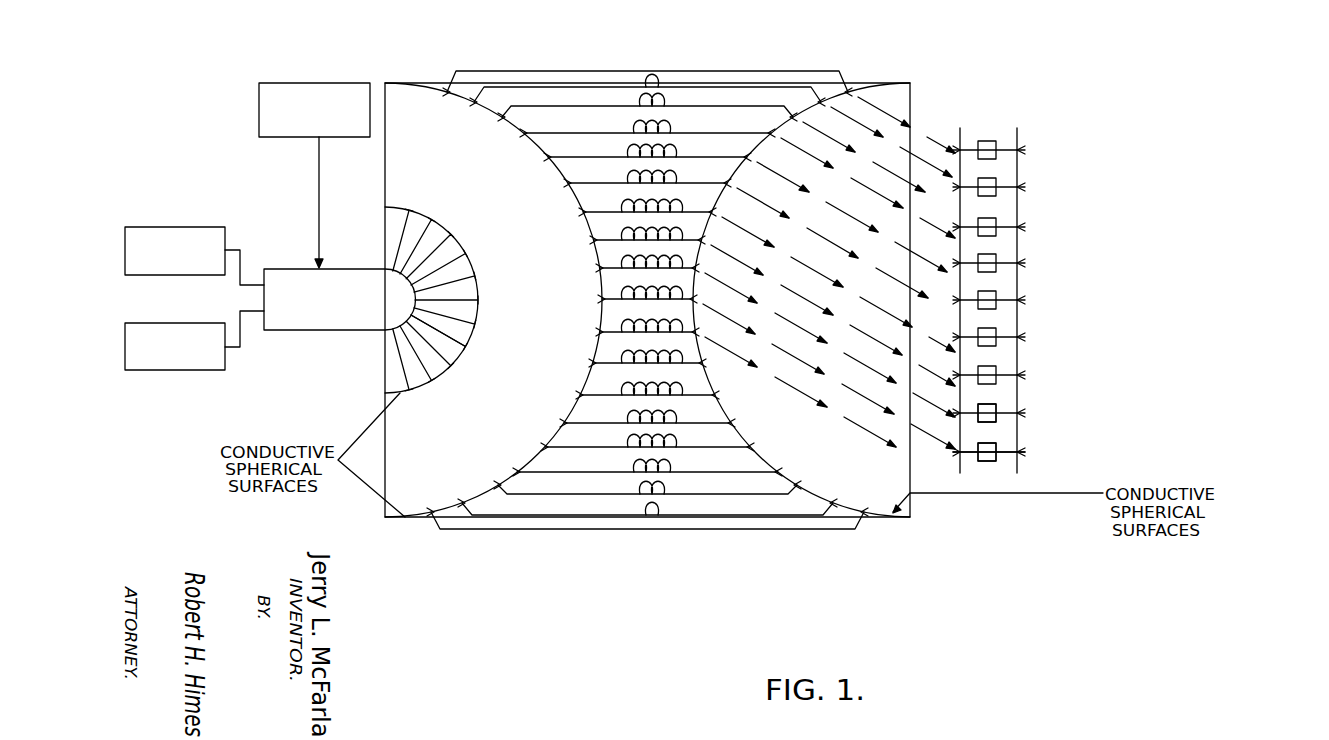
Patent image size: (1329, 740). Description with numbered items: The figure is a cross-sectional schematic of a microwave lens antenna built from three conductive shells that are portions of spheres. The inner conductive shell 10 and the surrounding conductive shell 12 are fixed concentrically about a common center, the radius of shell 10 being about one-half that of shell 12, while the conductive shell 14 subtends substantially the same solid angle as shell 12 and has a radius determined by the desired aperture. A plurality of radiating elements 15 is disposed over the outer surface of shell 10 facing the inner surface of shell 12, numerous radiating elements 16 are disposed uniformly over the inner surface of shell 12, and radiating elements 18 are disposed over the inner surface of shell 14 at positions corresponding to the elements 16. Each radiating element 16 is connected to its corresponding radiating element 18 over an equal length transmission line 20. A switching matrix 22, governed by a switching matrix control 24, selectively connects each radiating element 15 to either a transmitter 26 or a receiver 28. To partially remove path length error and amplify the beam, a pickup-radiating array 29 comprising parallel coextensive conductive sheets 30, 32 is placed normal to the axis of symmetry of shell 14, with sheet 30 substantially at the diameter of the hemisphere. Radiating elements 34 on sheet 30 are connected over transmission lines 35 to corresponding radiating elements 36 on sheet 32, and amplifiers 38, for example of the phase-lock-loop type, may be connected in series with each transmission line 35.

The conductive shell 10 is at (443, 223).
The conductive shell 12 is at (520, 125).
The conductive shell 14 is at (800, 107).
The radiating elements 15 is at (478, 330).
The radiating elements 16 is at (580, 213).
The radiating elements 18 is at (702, 240).
The equal length transmission line 20 is at (664, 447).
The switching matrix 22 is at (300, 330).
The switching matrix control 24 is at (262, 126).
The transmitter 26 is at (180, 268).
The receiver 28 is at (197, 367).
The pickup-radiating array 29 is at (1077, 303).
The conductive sheet 30 is at (962, 436).
The conductive sheet 32 is at (1017, 403).
The radiating elements 34 is at (955, 250).
The transmission lines 35 is at (967, 185).
The radiating elements 36 is at (1035, 305).
The amplifiers 38 is at (1000, 400).